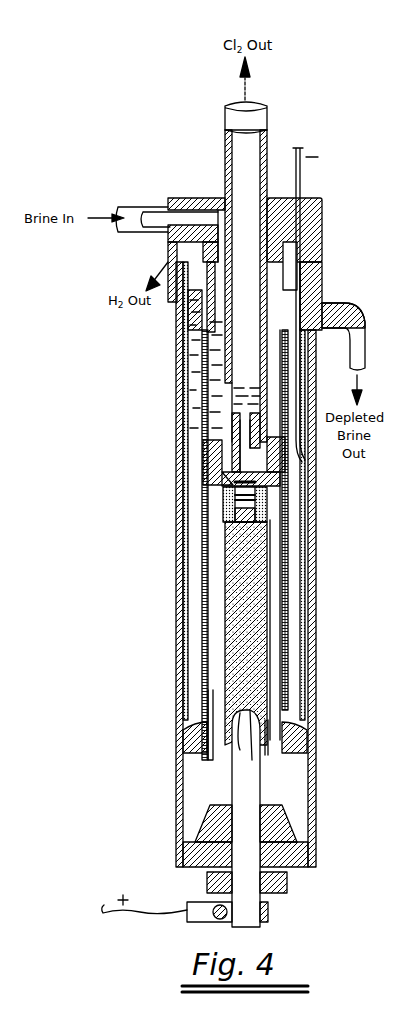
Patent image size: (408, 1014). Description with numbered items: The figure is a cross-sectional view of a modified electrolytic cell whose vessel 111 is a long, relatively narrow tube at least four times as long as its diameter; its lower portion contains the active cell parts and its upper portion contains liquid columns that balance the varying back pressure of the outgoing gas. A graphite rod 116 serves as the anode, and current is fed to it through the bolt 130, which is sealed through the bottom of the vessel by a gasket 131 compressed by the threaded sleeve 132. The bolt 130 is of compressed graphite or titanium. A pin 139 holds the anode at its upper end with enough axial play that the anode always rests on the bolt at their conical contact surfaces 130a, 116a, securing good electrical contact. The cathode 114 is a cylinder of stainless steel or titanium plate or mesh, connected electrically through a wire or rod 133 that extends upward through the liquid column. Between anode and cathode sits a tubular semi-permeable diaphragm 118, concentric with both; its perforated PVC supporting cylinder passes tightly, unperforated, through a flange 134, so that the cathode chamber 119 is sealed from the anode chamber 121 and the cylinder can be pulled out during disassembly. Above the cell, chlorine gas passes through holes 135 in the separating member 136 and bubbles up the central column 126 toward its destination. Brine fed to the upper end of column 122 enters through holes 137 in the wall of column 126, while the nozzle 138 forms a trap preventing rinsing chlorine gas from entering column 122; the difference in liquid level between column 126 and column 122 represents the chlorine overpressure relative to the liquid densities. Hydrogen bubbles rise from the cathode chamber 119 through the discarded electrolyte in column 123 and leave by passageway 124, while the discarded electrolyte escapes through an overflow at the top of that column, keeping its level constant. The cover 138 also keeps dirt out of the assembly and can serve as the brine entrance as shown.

The vessel 111 is at (318, 518).
The cathode 114 is at (305, 590).
The graphite rod 116 is at (240, 657).
The conical contact surface 116a is at (240, 722).
The semi-permeable diaphragm 118 is at (290, 562).
The cathode chamber 119 is at (185, 700).
The anode chamber 121 is at (272, 628).
The liquid column 122 is at (215, 310).
The liquid column 123 is at (190, 352).
The passageway 124 is at (170, 252).
The central liquid column 126 is at (248, 392).
The bolt 130 is at (250, 787).
The conical contact surface 130a is at (268, 725).
The gasket 131 is at (272, 828).
The threaded sleeve 132 is at (275, 887).
The wire or rod 133 is at (301, 184).
The flange 134 is at (305, 735).
The holes 135 is at (206, 480).
The separating member 136 is at (209, 461).
The holes 137 is at (228, 433).
The nozzle 138 is at (310, 222).
The pin 139 is at (232, 512).